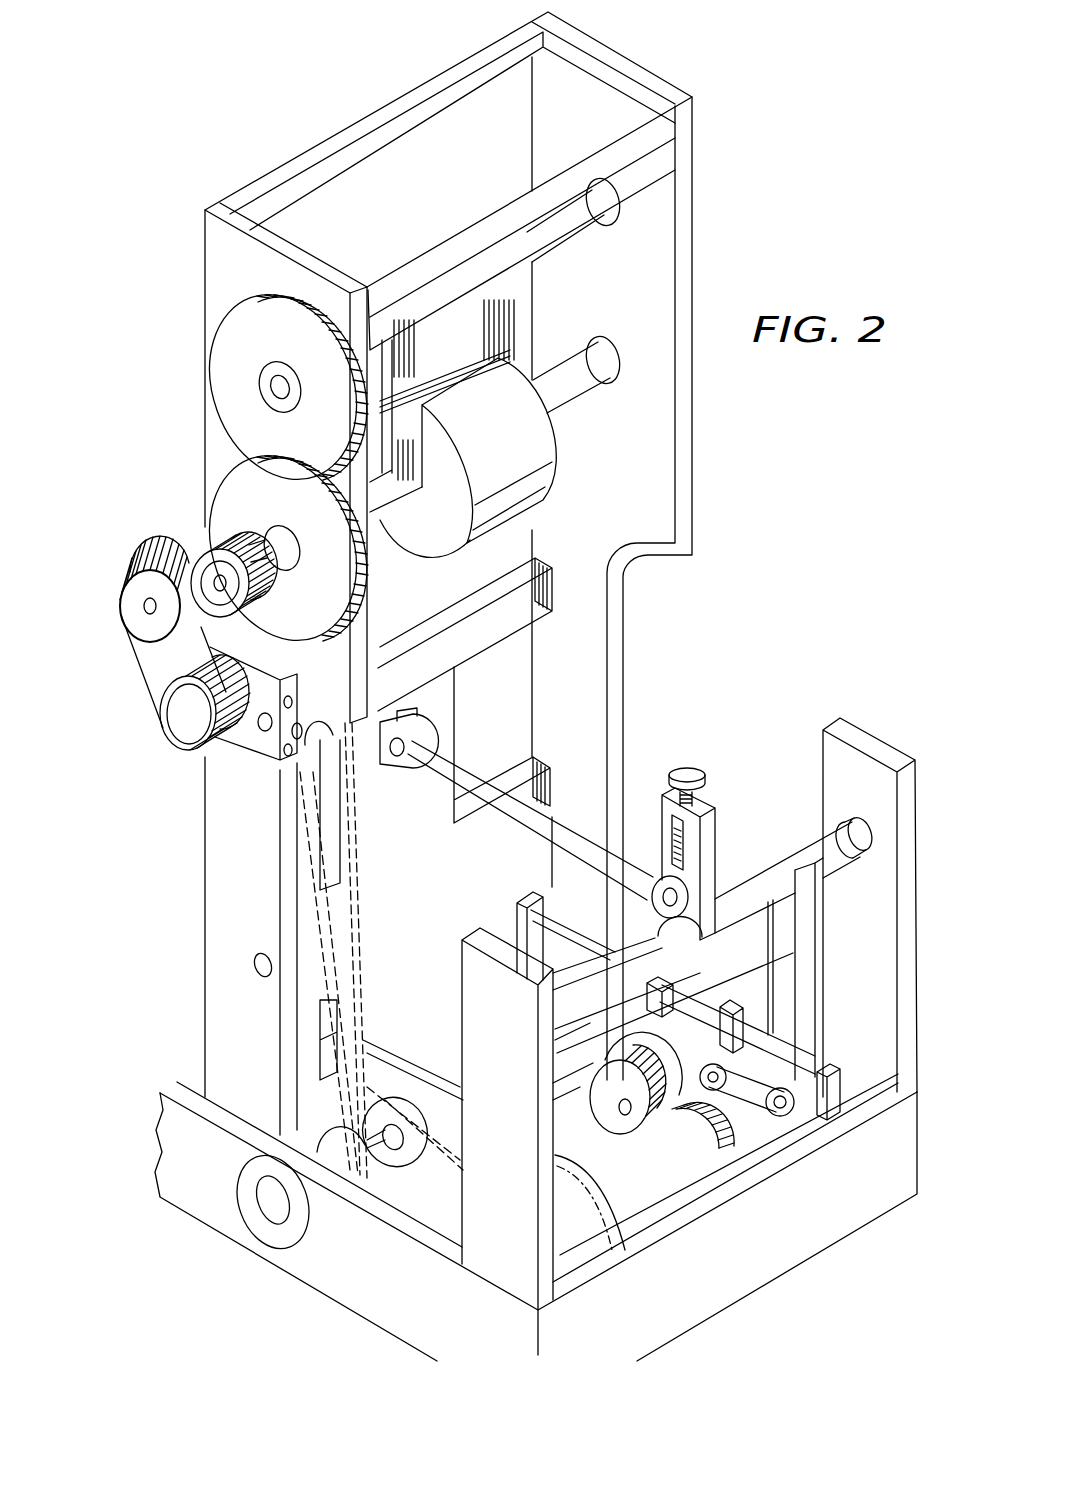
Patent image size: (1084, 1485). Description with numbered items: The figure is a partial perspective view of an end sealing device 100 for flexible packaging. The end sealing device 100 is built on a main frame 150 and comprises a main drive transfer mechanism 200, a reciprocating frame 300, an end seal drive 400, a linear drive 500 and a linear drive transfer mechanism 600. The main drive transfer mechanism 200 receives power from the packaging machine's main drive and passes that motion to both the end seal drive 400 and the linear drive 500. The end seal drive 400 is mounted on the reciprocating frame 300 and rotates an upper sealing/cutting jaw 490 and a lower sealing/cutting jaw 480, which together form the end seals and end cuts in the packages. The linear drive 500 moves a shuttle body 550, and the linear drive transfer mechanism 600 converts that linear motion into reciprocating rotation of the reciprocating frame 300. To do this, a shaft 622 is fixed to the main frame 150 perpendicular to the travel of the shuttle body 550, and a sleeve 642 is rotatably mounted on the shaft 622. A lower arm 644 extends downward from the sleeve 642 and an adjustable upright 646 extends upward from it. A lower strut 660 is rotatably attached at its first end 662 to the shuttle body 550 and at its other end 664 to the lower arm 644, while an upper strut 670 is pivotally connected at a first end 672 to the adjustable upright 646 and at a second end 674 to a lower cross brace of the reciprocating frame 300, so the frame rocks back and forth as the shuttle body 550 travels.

The end sealing device 100 is at (823, 413).
The main frame 150 is at (197, 1208).
The main drive transfer mechanism 200 is at (695, 1123).
The reciprocating frame 300 is at (693, 402).
The end seal drive 400 is at (148, 508).
The lower sealing/cutting jaw 480 is at (513, 350).
The upper sealing/cutting jaw 490 is at (507, 284).
The linear drive 500 is at (740, 1121).
The shuttle body 550 is at (698, 1030).
The linear drive transfer mechanism 600 is at (805, 838).
The shaft 622 is at (860, 827).
The sleeve 642 is at (758, 880).
The lower arm 644 is at (812, 945).
The adjustable upright 646 is at (703, 810).
The lower strut 660 is at (747, 1092).
The first end of lower strut 662 is at (723, 1075).
The link bracket 664 is at (807, 1117).
The upper strut 670 is at (535, 818).
The first end of upper strut 672 is at (652, 890).
The second end of upper strut 674 is at (420, 727).